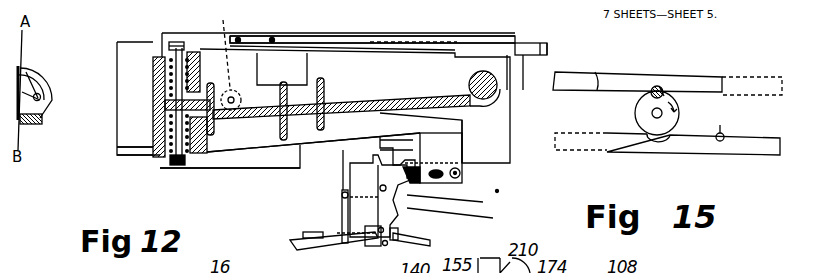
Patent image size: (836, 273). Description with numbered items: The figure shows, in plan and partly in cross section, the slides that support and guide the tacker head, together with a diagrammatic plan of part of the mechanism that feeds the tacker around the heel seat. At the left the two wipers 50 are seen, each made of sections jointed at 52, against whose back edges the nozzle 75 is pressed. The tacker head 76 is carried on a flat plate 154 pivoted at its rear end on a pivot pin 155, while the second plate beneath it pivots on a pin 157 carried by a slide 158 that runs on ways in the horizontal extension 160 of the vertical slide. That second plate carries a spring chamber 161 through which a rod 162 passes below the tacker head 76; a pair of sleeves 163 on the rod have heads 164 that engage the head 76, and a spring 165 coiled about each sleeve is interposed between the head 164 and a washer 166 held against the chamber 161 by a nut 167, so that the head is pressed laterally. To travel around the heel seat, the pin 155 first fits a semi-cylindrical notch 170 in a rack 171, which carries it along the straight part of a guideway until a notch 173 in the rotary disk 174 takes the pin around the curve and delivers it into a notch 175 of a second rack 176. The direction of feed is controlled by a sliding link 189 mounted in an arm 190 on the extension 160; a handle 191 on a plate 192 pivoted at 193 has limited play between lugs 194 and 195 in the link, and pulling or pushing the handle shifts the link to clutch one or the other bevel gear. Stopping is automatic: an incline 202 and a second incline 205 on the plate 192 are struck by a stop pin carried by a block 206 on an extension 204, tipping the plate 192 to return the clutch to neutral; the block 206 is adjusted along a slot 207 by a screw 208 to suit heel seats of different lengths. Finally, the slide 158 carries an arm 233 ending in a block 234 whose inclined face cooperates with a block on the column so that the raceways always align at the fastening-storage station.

In FIG. 12, the wipers 50 is at (30, 85).
In FIG. 12, the wiper joint 52 is at (42, 97).
In FIG. 12, the nozzle 75 is at (33, 121).
In FIG. 12, the tacker head 76 is at (347, 100).
In FIG. 12, the flat plate 154 is at (397, 72).
In FIG. 12, the pivot pin 155 is at (490, 78).
In FIG. 15, the pivot pin 155 is at (657, 87).
In FIG. 12, the pin 157 is at (213, 46).
In FIG. 12, the slide 158 is at (270, 165).
In FIG. 12, the horizontal extension 160 is at (142, 156).
In FIG. 12, the spring chamber 161 is at (142, 155).
In FIG. 12, the rod 162 is at (158, 128).
In FIG. 12, the sleeves 163 is at (158, 70).
In FIG. 12, the heads 164 is at (160, 102).
In FIG. 12, the spring 165 is at (170, 58).
In FIG. 12, the washer 166 is at (166, 47).
In FIG. 12, the nut 167 is at (176, 42).
In FIG. 15, the semi-cylindrical notch 170 is at (664, 93).
In FIG. 15, the rack 171 is at (613, 78).
In FIG. 15, the semi-cylindrical notch 173 is at (672, 100).
In FIG. 15, the rotary disk 174 is at (636, 112).
In FIG. 15, the semi-cylindrical notch 175 is at (727, 128).
In FIG. 15, the rack 176 is at (693, 143).
In FIG. 12, the sliding link 189 is at (425, 243).
In FIG. 12, the arm 190 is at (345, 181).
In FIG. 12, the handle 191 is at (320, 250).
In FIG. 12, the plate 192 is at (380, 208).
In FIG. 12, the pivot 193 is at (514, 188).
In FIG. 12, the lug 194 is at (373, 233).
In FIG. 12, the lug 195 is at (417, 224).
In FIG. 12, the incline 202 is at (462, 202).
In FIG. 12, the extension 204 is at (462, 148).
In FIG. 12, the second incline 205 is at (467, 219).
In FIG. 12, the block 206 is at (463, 163).
In FIG. 12, the slot 207 is at (440, 170).
In FIG. 12, the screw 208 is at (410, 140).
In FIG. 12, the arm 233 is at (280, 40).
In FIG. 12, the block 234 is at (547, 47).